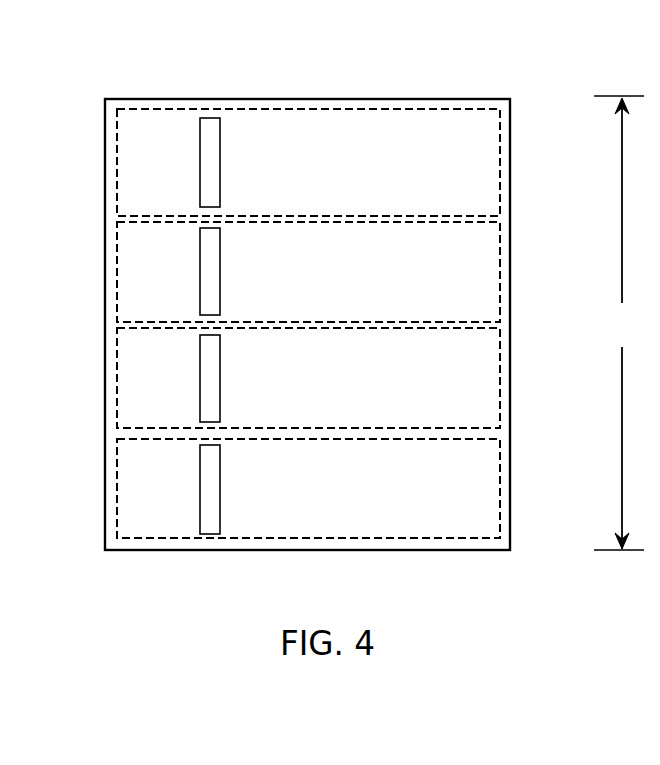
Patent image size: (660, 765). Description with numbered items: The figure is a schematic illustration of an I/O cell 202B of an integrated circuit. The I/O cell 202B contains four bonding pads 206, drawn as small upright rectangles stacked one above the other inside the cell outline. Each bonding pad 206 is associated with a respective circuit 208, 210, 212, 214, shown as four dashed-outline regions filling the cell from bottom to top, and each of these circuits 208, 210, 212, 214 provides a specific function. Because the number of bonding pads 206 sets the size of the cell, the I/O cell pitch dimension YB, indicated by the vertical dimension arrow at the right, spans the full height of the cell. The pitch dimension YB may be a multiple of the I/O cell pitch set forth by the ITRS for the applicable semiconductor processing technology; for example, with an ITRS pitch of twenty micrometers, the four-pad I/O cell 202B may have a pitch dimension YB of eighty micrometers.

The I/O cell 202B is at (105, 99).
The bonding pad 206 is at (200, 169).
The circuit 208 is at (500, 490).
The circuit 210 is at (500, 382).
The circuit 212 is at (500, 273).
The circuit 214 is at (500, 170).
The I/O cell pitch dimension YB is at (619, 323).